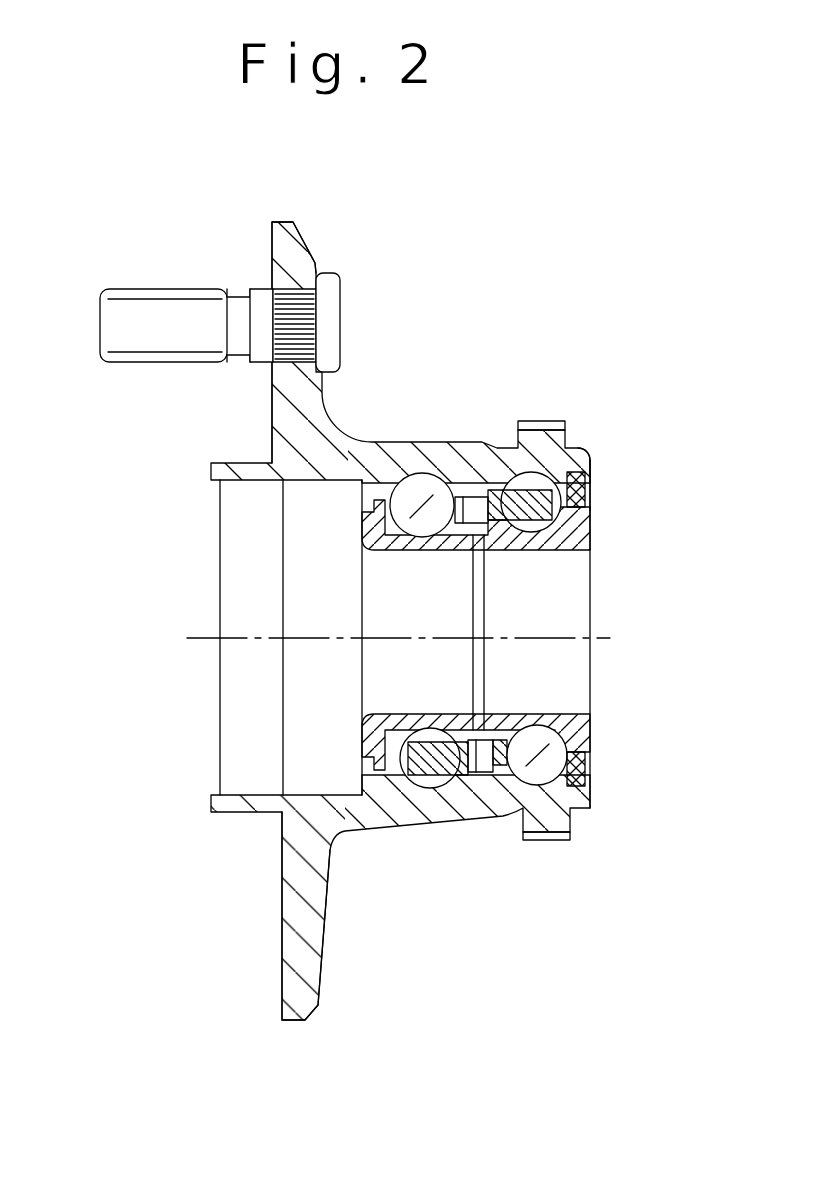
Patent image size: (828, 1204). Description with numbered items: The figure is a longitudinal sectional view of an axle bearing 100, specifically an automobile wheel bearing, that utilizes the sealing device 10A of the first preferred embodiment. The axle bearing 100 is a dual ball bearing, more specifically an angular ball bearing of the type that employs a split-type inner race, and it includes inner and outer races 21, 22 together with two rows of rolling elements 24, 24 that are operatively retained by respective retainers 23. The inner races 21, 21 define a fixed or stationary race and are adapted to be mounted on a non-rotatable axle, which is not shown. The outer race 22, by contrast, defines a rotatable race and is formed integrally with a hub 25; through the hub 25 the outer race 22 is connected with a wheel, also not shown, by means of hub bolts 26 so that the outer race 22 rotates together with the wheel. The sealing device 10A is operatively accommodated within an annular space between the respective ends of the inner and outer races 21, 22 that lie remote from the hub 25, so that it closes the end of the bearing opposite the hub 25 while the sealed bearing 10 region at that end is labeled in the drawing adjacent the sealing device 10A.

The axle bearing 100 is at (472, 428).
The outer ring 10 is at (592, 772).
The sealing device 10A is at (594, 486).
The inner race 21 is at (437, 497).
The outer race 22 is at (434, 452).
The retainer 23 is at (500, 773).
The rolling element 24 is at (425, 776).
The hub 25 is at (288, 252).
The hub bolt 26 is at (160, 313).